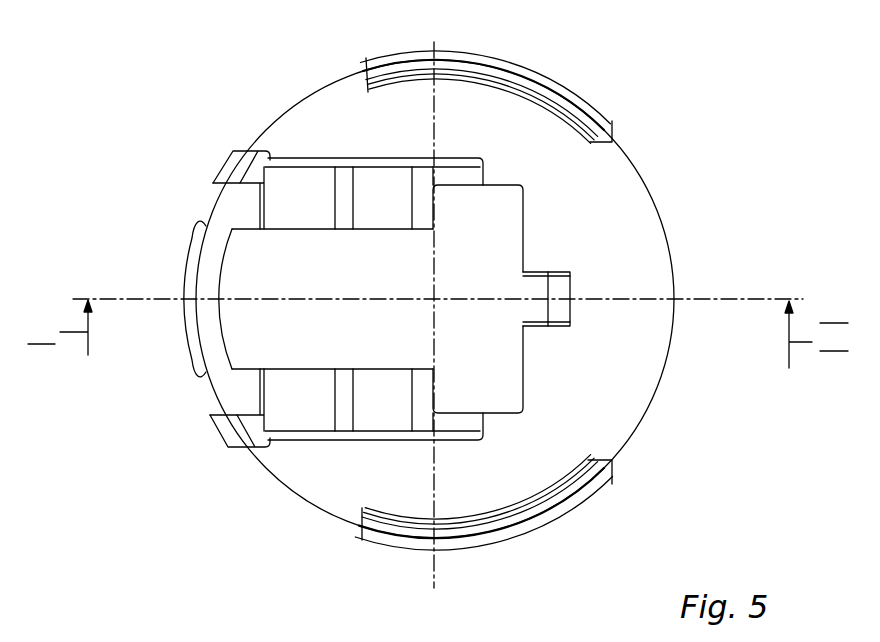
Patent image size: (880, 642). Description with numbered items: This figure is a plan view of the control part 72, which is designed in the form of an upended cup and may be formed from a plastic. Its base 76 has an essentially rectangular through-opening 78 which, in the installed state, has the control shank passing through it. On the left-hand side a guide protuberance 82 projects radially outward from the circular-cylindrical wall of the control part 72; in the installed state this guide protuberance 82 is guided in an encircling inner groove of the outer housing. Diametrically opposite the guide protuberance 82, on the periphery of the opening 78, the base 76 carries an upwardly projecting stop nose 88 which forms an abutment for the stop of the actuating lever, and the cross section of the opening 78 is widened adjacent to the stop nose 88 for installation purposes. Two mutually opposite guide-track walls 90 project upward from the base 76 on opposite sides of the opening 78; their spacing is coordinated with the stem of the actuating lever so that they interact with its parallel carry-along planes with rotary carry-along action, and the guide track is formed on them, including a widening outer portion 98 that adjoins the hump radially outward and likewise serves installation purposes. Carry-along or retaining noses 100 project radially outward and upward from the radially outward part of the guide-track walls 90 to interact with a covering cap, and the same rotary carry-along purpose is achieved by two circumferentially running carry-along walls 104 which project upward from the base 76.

The control part 72 is at (664, 218).
The base 76 is at (612, 192).
The through-opening 78 is at (258, 331).
The guide protuberance 82 is at (200, 250).
The stop nose 88 is at (543, 285).
The guide-track walls 90 is at (318, 195).
The outer portion 98 is at (250, 205).
The carry-along or retaining noses 100 is at (228, 126).
The carry-along walls 104 is at (543, 81).